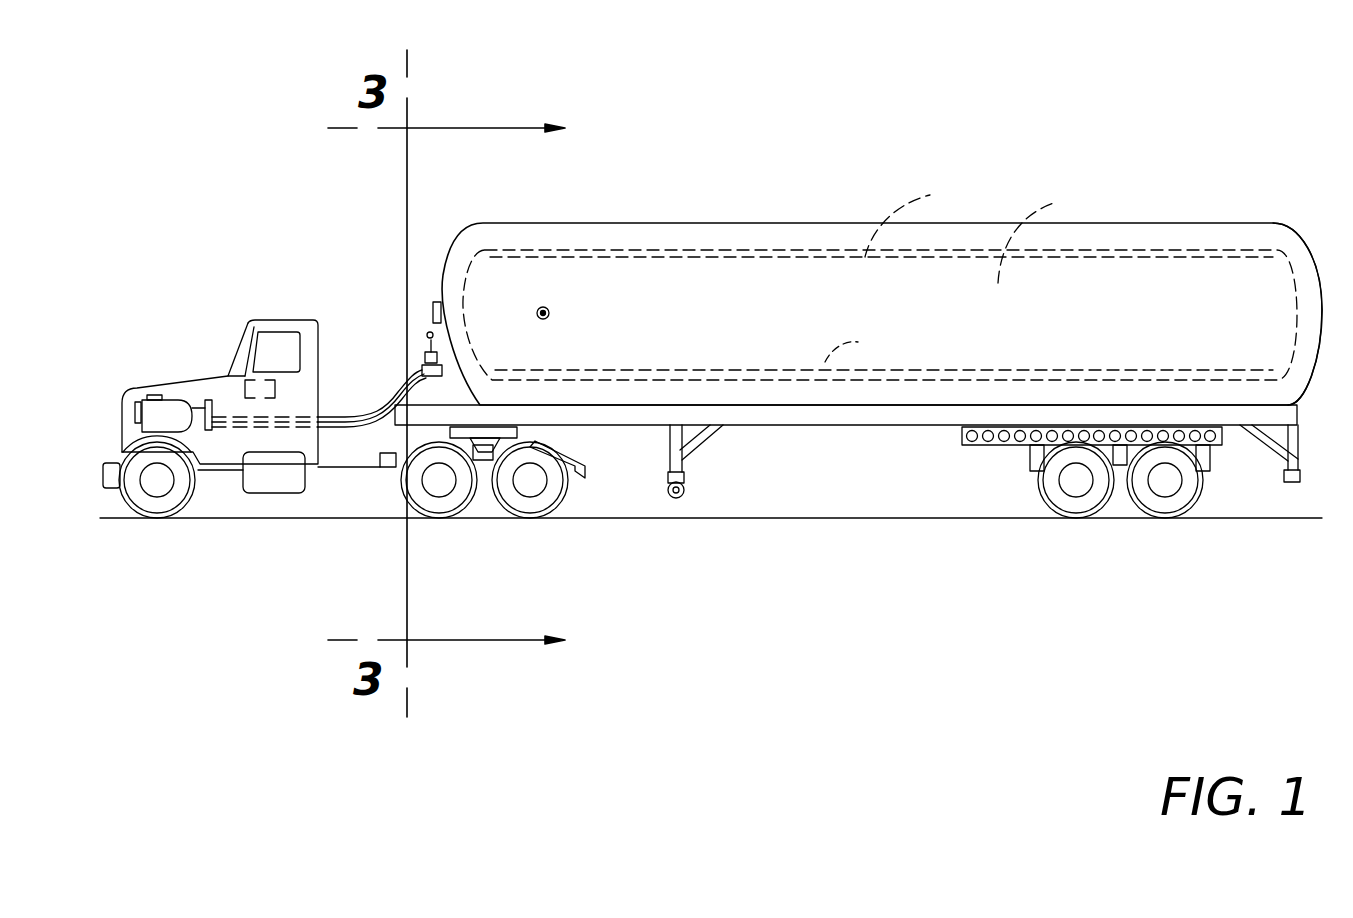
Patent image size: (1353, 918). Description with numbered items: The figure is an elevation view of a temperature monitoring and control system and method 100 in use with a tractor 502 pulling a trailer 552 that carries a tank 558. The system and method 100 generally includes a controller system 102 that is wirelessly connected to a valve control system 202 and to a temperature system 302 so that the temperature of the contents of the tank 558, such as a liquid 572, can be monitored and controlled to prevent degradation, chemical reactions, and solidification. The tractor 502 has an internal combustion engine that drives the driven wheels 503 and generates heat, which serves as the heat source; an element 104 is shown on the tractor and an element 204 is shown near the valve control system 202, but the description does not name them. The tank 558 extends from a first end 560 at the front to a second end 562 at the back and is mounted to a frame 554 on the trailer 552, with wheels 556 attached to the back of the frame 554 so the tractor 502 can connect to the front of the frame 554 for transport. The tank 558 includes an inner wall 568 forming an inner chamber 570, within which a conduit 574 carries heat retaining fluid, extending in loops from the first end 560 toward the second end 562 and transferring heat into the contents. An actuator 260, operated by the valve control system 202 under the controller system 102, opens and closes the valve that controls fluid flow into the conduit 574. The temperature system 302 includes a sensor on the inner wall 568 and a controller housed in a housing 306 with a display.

The temperature monitoring and control system and method 100 is at (312, 234).
The controller system 102 is at (213, 378).
The controller 104 is at (280, 386).
The valve control system 202 is at (384, 208).
The fuel fitting 204 is at (433, 305).
The actuator 260 is at (425, 350).
The temperature system 302 is at (598, 321).
The housing 306 is at (550, 312).
The tractor 502 is at (201, 311).
The driven wheels 503 is at (402, 490).
The trailer 552 is at (965, 145).
The frame 554 is at (787, 418).
The wheels 556 is at (1040, 490).
The tank 558 is at (813, 192).
The first end 560 is at (483, 223).
The second end 562 is at (1253, 222).
The inner wall 568 is at (1297, 312).
The inner chamber 570 is at (1056, 231).
The liquid 572 is at (927, 218).
The conduit 574 is at (870, 344).